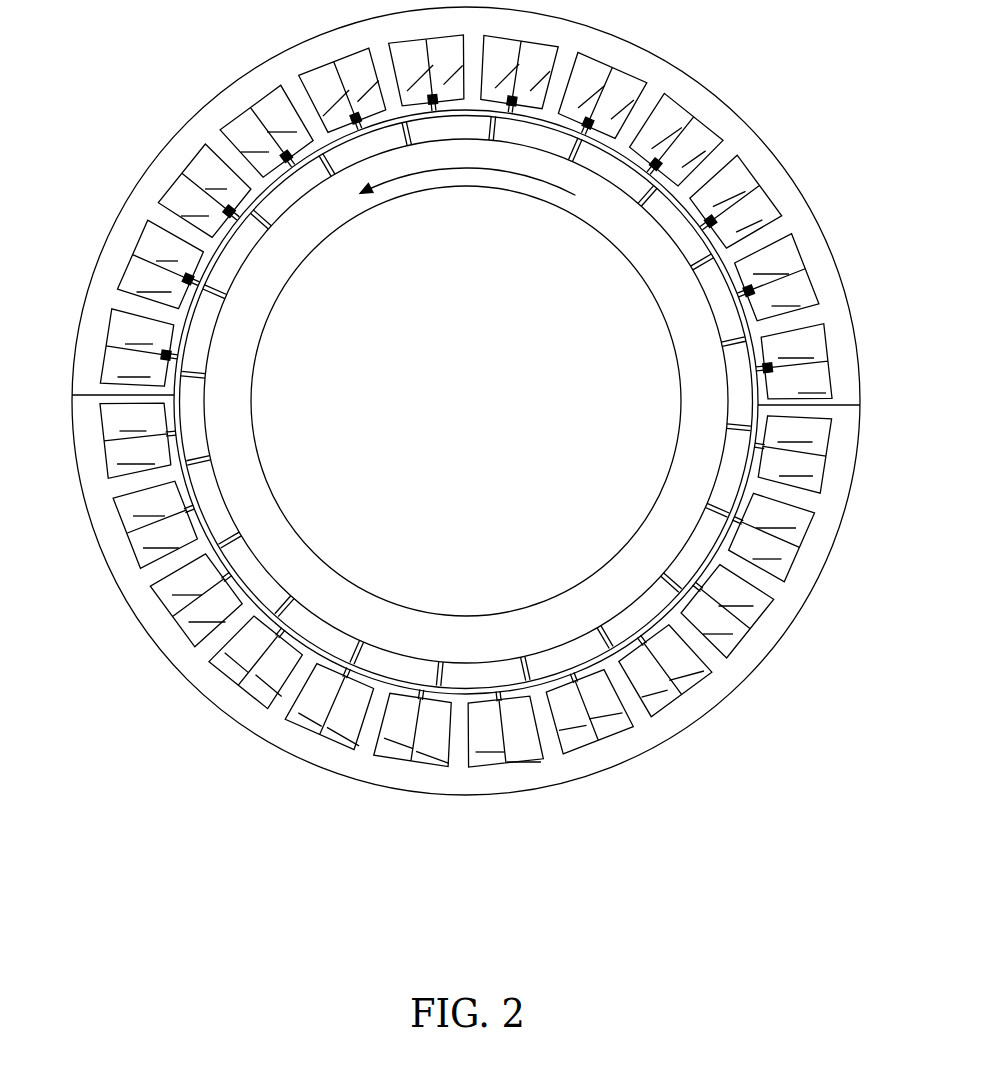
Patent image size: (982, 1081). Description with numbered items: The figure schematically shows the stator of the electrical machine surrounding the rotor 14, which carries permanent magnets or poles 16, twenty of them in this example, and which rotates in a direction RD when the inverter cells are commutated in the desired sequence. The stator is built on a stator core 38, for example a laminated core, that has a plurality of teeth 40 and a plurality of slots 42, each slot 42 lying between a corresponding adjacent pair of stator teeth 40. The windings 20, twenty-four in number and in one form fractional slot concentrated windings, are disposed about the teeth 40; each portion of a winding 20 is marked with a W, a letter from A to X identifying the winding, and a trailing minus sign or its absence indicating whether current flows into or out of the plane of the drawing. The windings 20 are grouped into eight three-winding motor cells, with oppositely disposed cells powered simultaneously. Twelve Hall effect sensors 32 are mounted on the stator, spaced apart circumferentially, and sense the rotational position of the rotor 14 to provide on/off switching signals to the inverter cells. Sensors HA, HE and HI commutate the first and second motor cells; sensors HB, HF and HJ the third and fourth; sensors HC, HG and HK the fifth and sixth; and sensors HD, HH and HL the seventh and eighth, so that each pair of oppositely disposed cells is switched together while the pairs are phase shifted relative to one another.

The rotor 14 is at (405, 607).
The permanent magnets (poles) 16 is at (466, 401).
The stator windings 20 is at (128, 268).
The Hall effect sensors 32 is at (364, 113).
The stator core 38 is at (638, 752).
The stator teeth 40 is at (130, 303).
The slots 42 is at (296, 166).
The direction of rotation RD is at (465, 170).
The Hall effect sensor HA is at (766, 373).
The Hall effect sensor HB is at (748, 296).
The Hall effect sensor HC is at (710, 226).
The Hall effect sensor HD is at (656, 169).
The Hall effect sensor HE is at (588, 128).
The Hall effect sensor HF is at (511, 105).
The Hall effect sensor HG is at (431, 104).
The Hall effect sensor HH is at (354, 118).
The Hall effect sensor HI is at (284, 157).
The Hall effect sensor HJ is at (227, 210).
The Hall effect sensor HK is at (190, 284).
The Hall effect sensor HL is at (170, 360).